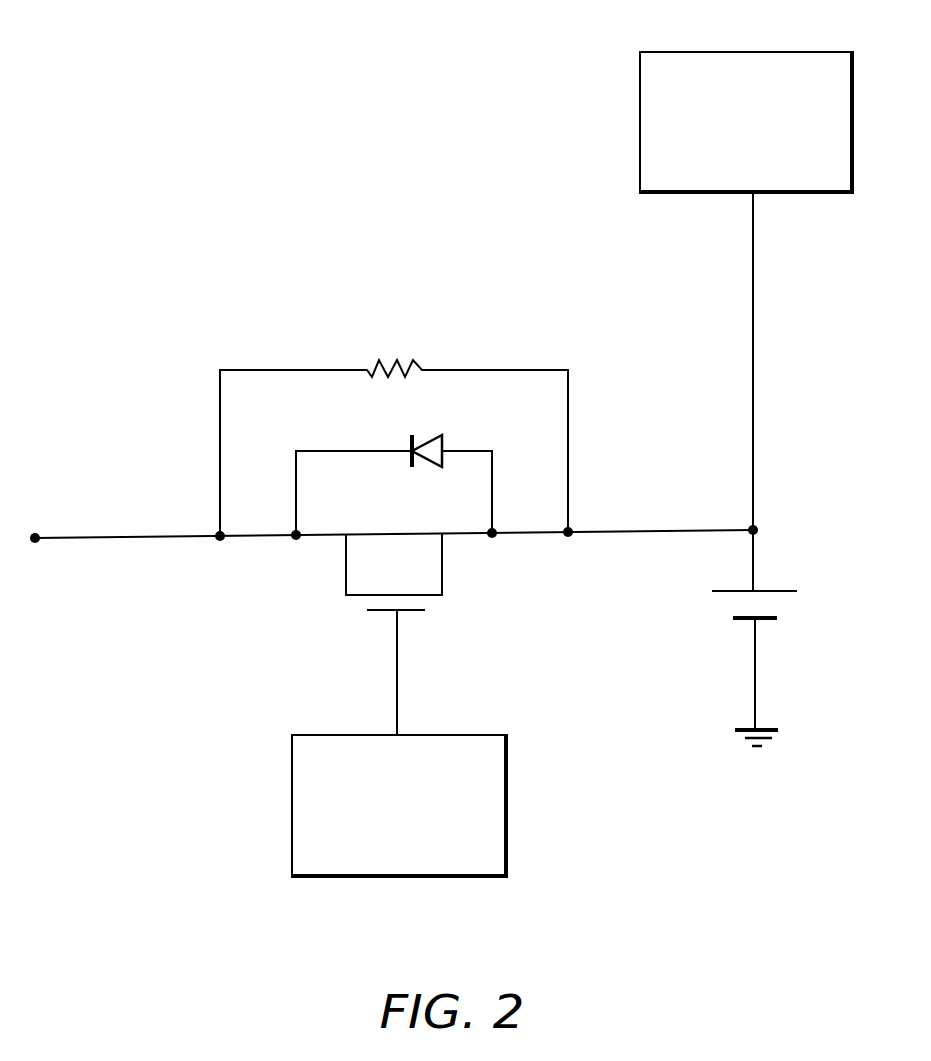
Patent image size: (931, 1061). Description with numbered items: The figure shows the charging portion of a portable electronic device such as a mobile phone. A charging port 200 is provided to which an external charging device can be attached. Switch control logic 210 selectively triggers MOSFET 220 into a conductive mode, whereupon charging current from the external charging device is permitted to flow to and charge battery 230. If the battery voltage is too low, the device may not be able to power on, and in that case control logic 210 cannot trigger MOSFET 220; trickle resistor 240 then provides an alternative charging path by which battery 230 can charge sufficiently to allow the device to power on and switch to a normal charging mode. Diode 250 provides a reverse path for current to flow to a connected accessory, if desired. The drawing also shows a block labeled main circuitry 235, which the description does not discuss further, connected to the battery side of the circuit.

The charging port 200 is at (35, 545).
The switch control logic 210 is at (397, 880).
The MOSFET 220 is at (340, 616).
The battery 230 is at (783, 590).
The main circuitry 235 is at (748, 52).
The trickle resistor 240 is at (397, 360).
The diode 250 is at (435, 468).